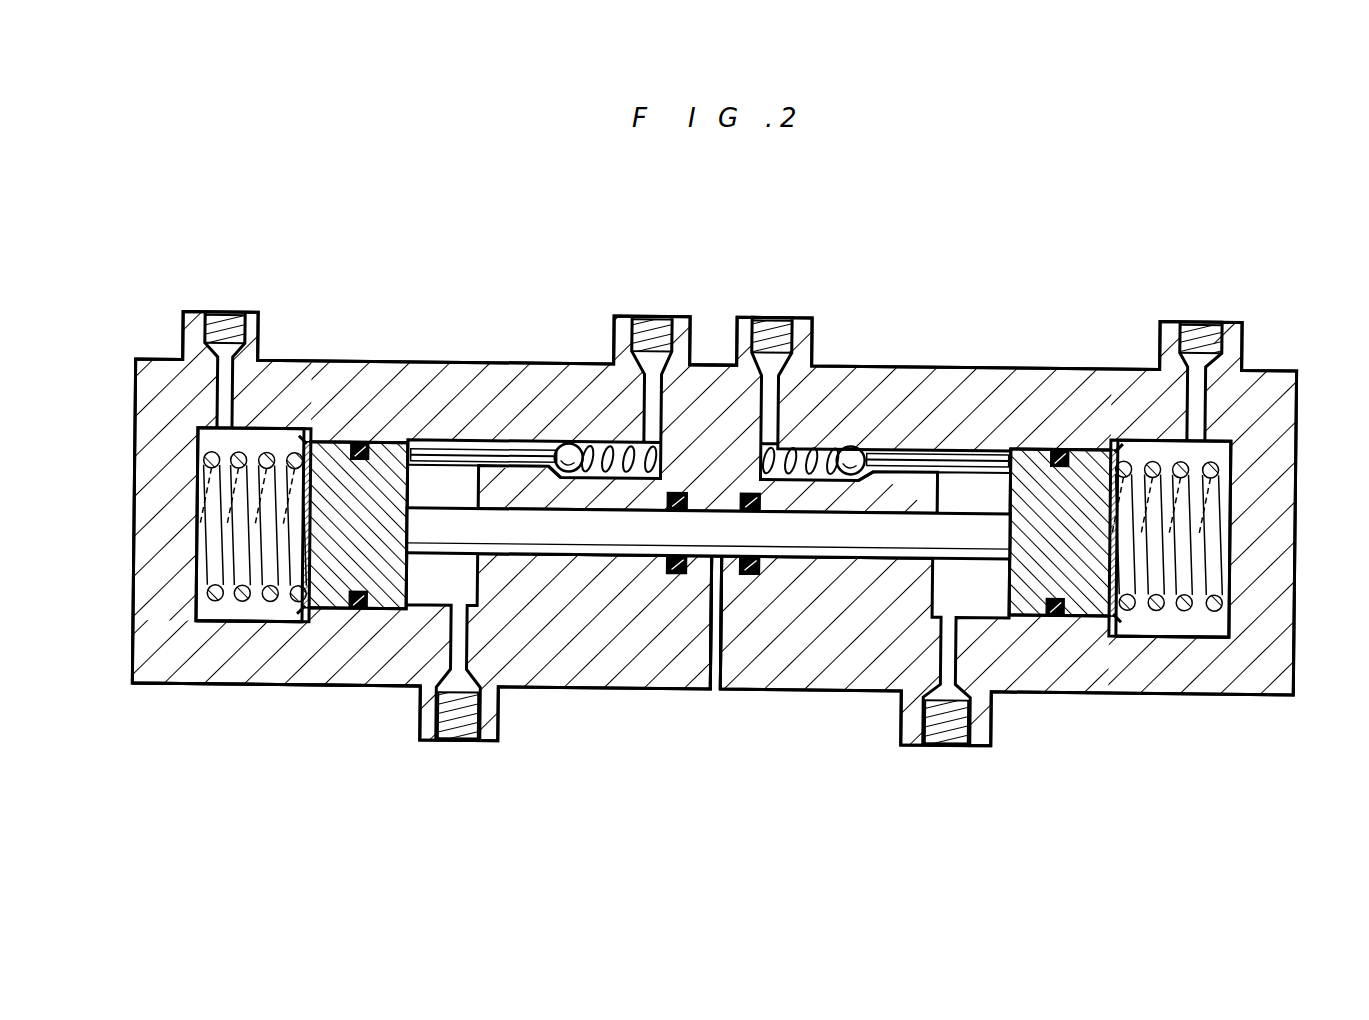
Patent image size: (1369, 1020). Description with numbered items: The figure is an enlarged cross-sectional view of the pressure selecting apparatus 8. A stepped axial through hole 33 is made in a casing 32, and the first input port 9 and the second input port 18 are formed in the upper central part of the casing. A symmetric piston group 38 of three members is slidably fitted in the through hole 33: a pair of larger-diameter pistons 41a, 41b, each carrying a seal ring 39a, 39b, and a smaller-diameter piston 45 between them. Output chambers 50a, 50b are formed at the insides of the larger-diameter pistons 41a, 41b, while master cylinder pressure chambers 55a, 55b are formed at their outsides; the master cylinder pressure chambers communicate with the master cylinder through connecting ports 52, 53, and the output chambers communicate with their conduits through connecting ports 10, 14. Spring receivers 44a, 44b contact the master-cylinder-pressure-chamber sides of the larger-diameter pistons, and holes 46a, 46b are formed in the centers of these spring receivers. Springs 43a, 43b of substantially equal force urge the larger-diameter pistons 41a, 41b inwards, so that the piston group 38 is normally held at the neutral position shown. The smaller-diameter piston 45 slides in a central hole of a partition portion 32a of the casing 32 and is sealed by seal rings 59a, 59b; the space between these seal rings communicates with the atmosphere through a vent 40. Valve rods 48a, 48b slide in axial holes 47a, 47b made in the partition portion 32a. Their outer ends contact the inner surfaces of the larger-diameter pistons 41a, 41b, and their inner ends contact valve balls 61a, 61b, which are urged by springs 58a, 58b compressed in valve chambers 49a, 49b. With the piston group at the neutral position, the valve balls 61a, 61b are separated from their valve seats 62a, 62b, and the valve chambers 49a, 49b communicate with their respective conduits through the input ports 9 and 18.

The pressure selecting apparatus 8 is at (1274, 350).
The first input port 9 is at (768, 324).
The connecting port 10 is at (946, 742).
The connecting port 14 is at (457, 742).
The second input port 18 is at (650, 324).
The casing 32 is at (383, 410).
The partition portion 32a is at (707, 392).
The stepped axial through hole 33 is at (426, 604).
The piston group 38 is at (852, 535).
The seal ring 39a is at (1055, 613).
The seal ring 39b is at (358, 612).
The vent 40 is at (717, 682).
The larger-diameter piston 41a is at (1090, 600).
The larger-diameter piston 41b is at (335, 602).
The spring 43a is at (1190, 602).
The spring 43b is at (240, 602).
The spring receiver 44a is at (1113, 444).
The spring receiver 44b is at (306, 444).
The smaller-diameter piston 45 is at (563, 540).
The hole 46a is at (1226, 537).
The hole 46b is at (290, 526).
The axial hole 47a is at (927, 455).
The axial hole 47b is at (470, 456).
The valve rod 48a is at (979, 460).
The valve rod 48b is at (428, 458).
The valve chamber 49a is at (806, 530).
The valve chamber 49b is at (614, 530).
The output chamber 50a is at (954, 499).
The output chamber 50b is at (424, 502).
The connecting port 52 is at (1197, 324).
The connecting port 53 is at (222, 324).
The master cylinder pressure chamber 55a is at (1215, 620).
The master cylinder pressure chamber 55b is at (215, 606).
The spring 58a is at (776, 446).
The spring 58b is at (598, 447).
The seal ring 59a is at (752, 578).
The seal ring 59b is at (676, 578).
The valve ball 61a is at (838, 450).
The valve ball 61b is at (610, 450).
The valve seat 62a is at (863, 452).
The valve seat 62b is at (554, 446).